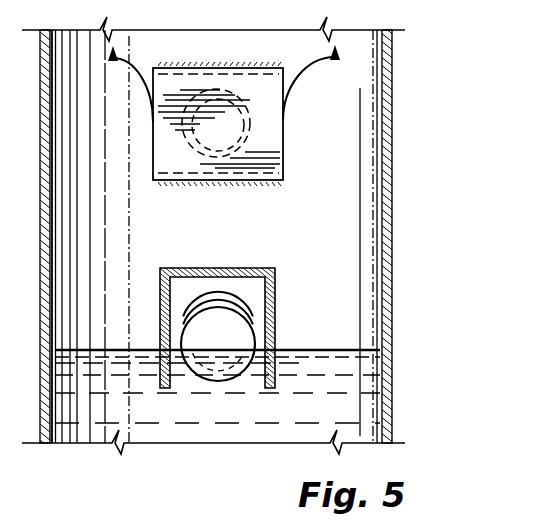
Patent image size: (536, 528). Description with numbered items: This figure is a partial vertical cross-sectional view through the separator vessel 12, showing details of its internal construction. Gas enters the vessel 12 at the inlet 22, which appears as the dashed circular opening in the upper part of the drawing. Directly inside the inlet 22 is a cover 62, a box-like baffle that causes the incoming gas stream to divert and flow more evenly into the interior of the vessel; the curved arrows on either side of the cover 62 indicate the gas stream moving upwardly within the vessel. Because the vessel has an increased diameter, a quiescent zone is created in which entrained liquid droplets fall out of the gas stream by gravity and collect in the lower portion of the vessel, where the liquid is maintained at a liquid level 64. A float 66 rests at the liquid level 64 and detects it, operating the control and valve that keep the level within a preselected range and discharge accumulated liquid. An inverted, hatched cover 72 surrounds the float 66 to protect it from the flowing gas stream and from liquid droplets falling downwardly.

The vessel 12 is at (392, 163).
The inlet 22 is at (222, 131).
The cover 62 is at (248, 86).
The liquid level 64 is at (340, 350).
The float 66 is at (208, 378).
The cover 72 is at (275, 300).